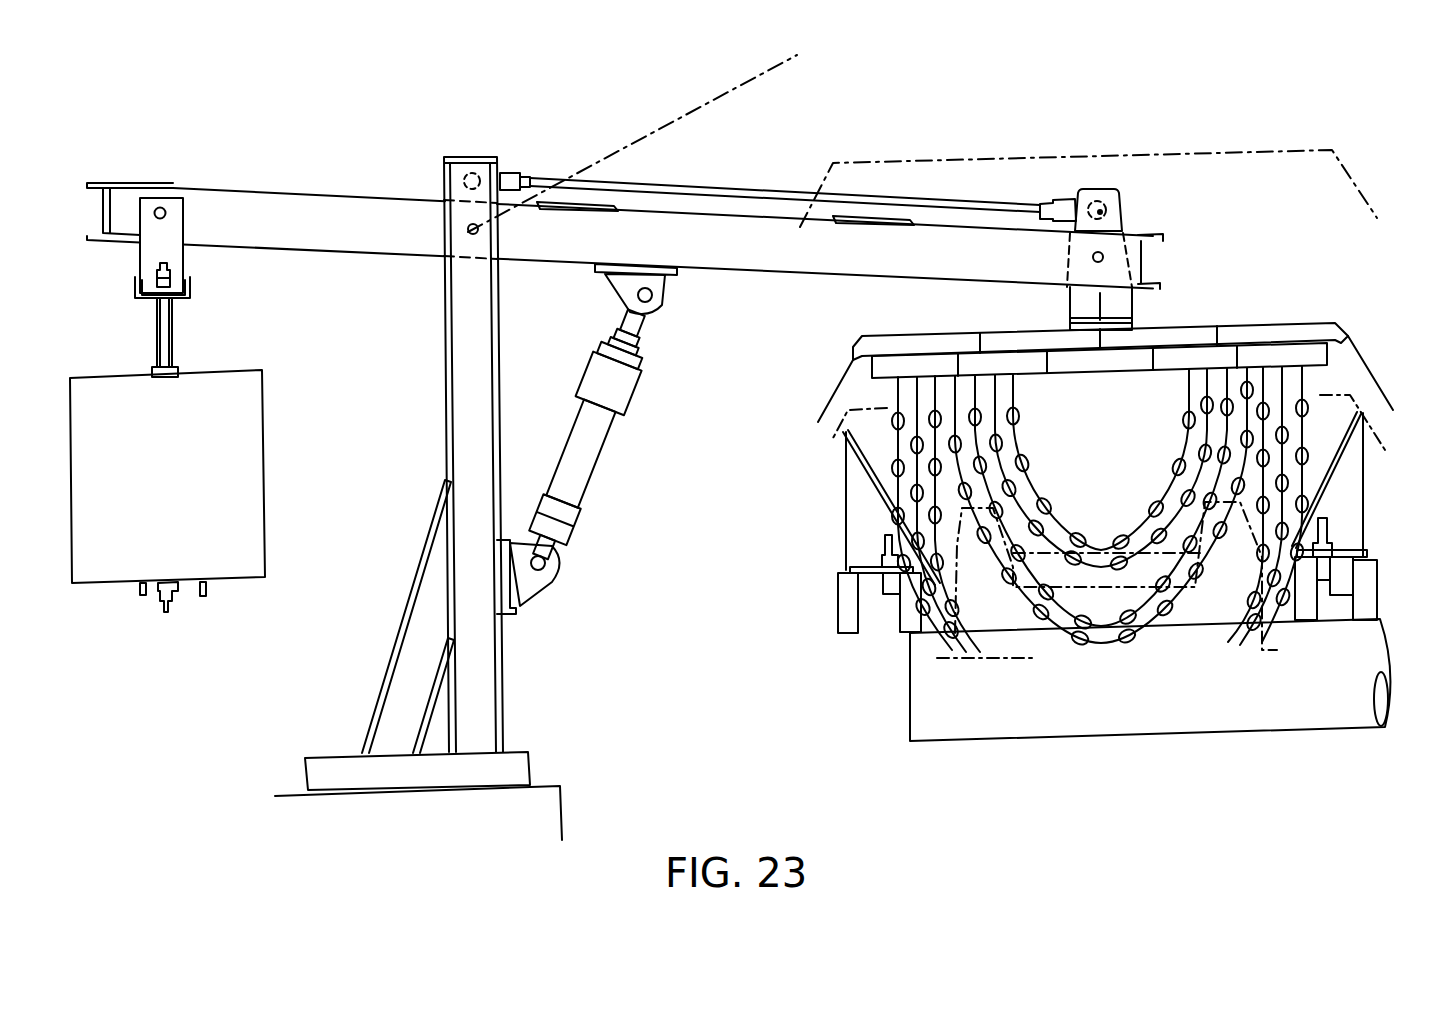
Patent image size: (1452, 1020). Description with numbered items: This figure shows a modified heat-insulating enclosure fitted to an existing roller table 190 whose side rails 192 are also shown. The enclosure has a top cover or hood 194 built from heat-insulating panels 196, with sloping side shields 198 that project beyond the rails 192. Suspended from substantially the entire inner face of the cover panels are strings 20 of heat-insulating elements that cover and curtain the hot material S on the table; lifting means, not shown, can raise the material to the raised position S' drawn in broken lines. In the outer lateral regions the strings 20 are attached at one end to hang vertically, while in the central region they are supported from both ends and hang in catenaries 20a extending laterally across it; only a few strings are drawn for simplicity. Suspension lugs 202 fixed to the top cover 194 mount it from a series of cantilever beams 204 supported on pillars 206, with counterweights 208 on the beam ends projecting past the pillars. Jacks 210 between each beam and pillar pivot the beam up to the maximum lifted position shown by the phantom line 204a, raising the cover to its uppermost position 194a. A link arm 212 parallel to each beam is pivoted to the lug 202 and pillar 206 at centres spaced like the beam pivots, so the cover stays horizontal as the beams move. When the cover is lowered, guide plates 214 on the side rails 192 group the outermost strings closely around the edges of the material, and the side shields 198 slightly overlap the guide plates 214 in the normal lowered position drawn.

The strings of heat-insulating elements 20 is at (937, 487).
The catenaries 20a is at (1007, 458).
The roller table 190 is at (905, 706).
The side rails 192 is at (838, 610).
The top cover 194 is at (1300, 313).
The uppermost position 194a is at (1222, 152).
The heat-insulating panels 196 is at (1187, 353).
The side shields 198 is at (1372, 372).
The suspension lugs 202 is at (1073, 307).
The cantilever beams 204 is at (833, 265).
The phantom line 204a is at (625, 140).
The pillars 206 is at (447, 380).
The counterweights 208 is at (247, 598).
The jacks 210 is at (588, 466).
The link arm 212 is at (758, 186).
The guide plates 214 is at (913, 480).
The hot material S is at (1107, 593).
The raised position S' is at (860, 538).